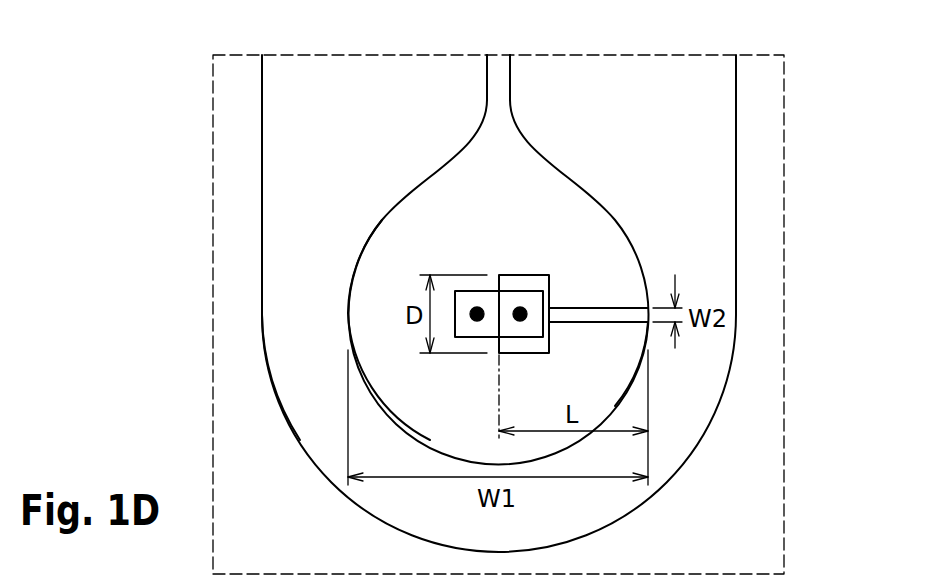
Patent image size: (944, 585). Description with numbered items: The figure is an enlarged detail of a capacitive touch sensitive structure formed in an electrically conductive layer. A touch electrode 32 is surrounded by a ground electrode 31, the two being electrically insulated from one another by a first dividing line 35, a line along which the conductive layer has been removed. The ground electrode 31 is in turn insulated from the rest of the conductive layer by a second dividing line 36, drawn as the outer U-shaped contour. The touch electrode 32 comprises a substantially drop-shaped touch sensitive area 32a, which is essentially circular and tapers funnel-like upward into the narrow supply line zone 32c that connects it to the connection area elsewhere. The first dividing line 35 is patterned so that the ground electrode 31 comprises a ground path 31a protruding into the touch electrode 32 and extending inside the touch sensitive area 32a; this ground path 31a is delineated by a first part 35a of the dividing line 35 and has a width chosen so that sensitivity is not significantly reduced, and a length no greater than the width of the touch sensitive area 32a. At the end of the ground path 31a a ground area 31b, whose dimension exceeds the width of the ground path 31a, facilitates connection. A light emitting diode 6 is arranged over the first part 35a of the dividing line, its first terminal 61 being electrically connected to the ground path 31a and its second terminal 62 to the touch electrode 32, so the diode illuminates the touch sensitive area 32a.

The light emitting diode 6 is at (470, 337).
The first terminal 61 is at (520, 306).
The second terminal 62 is at (477, 306).
The ground electrode 31 is at (298, 132).
The ground path 31a is at (593, 312).
The ground area 31b is at (530, 343).
The touch electrode 32 is at (511, 185).
The touch sensitive area 32a is at (388, 287).
The supply line zone 32c is at (498, 72).
The first dividing line 35 is at (400, 427).
The first part of the dividing line 35a is at (577, 323).
The second dividing line 36 is at (263, 350).